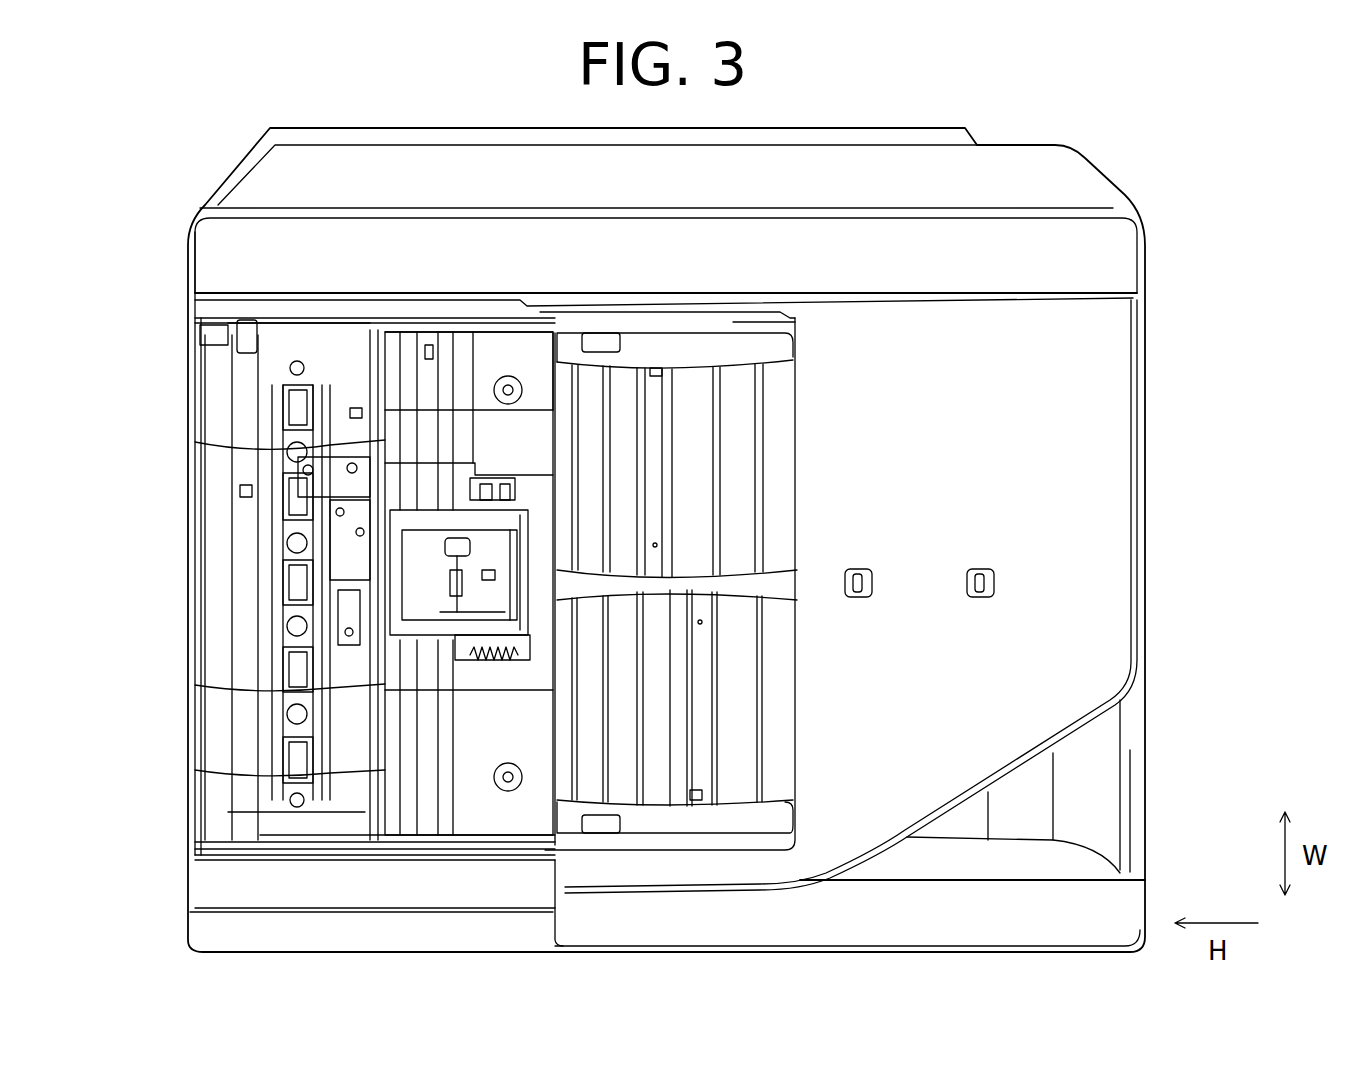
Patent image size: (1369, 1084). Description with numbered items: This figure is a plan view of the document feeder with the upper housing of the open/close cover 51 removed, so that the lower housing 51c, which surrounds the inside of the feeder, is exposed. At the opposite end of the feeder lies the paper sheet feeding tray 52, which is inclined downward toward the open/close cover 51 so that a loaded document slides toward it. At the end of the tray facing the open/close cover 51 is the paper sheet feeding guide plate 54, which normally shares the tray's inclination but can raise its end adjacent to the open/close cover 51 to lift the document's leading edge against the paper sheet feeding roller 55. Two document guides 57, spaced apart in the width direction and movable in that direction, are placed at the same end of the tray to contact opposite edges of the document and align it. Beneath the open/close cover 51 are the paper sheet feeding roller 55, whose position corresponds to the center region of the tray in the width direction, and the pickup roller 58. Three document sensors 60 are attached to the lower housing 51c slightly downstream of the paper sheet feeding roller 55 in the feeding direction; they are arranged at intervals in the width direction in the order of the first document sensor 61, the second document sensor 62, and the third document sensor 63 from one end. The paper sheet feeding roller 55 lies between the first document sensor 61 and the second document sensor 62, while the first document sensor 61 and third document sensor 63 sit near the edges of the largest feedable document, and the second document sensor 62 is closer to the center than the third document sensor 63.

The open/close cover 51 is at (512, 362).
The lower housing 51c is at (469, 371).
The paper sheet feeding tray 52 is at (1085, 605).
The paper sheet feeding guide plate 54 is at (738, 492).
The paper sheet feeding roller 55 is at (427, 592).
The document guides 57 is at (793, 328).
The pickup roller 58 is at (488, 550).
The document sensors 60 is at (317, 581).
The first document sensor 61 is at (390, 447).
The second document sensor 62 is at (390, 692).
The third document sensor 63 is at (390, 778).